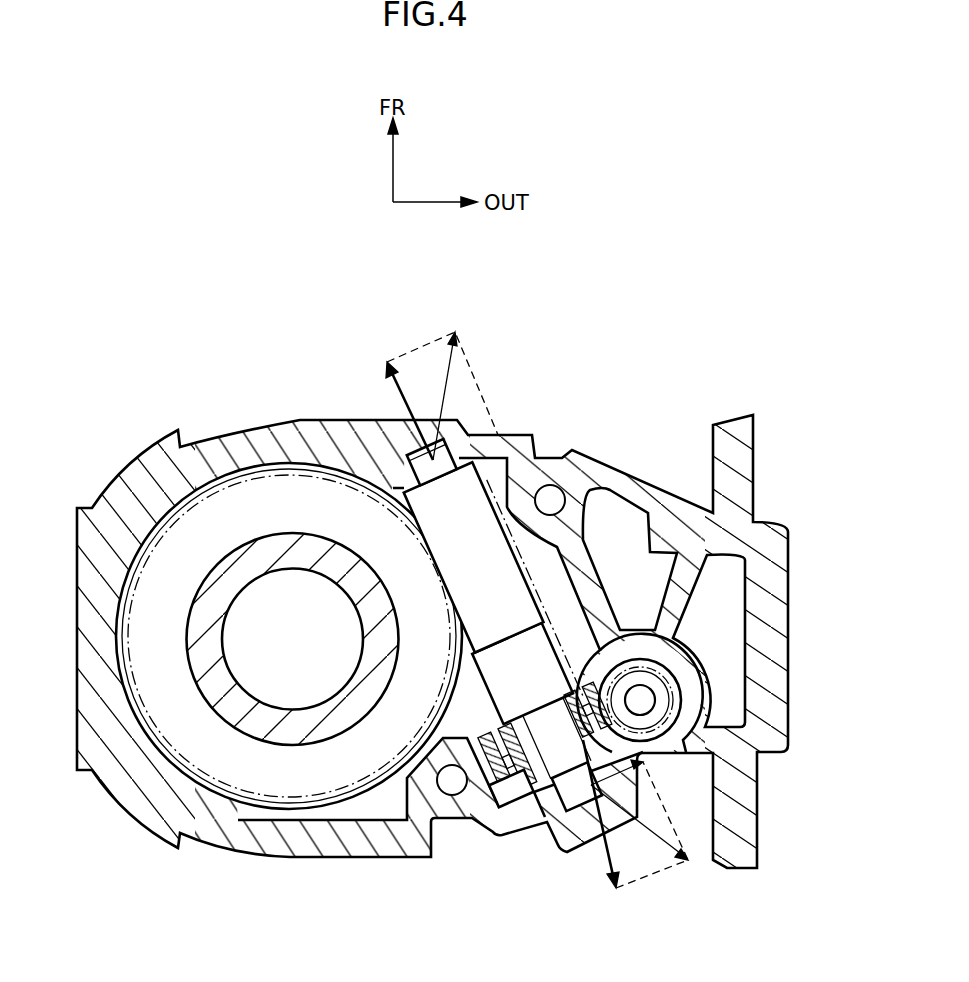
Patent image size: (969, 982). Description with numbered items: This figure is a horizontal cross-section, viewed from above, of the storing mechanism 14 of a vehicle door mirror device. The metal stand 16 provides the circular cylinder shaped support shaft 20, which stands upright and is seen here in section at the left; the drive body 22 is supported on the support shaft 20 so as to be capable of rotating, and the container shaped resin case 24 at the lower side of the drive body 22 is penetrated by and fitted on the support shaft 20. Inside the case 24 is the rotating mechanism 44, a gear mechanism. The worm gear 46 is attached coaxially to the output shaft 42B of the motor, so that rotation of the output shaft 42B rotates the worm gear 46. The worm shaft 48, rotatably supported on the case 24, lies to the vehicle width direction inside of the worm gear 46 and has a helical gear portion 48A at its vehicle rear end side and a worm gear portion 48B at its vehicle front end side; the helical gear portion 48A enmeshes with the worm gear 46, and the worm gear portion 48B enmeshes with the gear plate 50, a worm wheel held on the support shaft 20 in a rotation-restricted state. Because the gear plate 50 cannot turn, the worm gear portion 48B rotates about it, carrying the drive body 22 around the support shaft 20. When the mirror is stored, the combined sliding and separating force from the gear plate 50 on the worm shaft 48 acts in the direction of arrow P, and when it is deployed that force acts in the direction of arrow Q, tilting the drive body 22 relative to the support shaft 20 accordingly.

The storing mechanism 14 is at (210, 342).
The stand 16 is at (292, 639).
The support shaft 20 is at (293, 615).
The drive body 22 is at (631, 475).
The case 24 is at (412, 452).
The output shaft 42B is at (655, 703).
The rotating mechanism 44 is at (531, 795).
The worm gear 46 is at (677, 679).
The worm shaft 48 is at (553, 635).
The helical gear portion 48A is at (493, 838).
The worm gear portion 48B is at (530, 583).
The gear plate 50 is at (283, 808).
The arrow Q is at (447, 388).
The arrow P is at (643, 833).